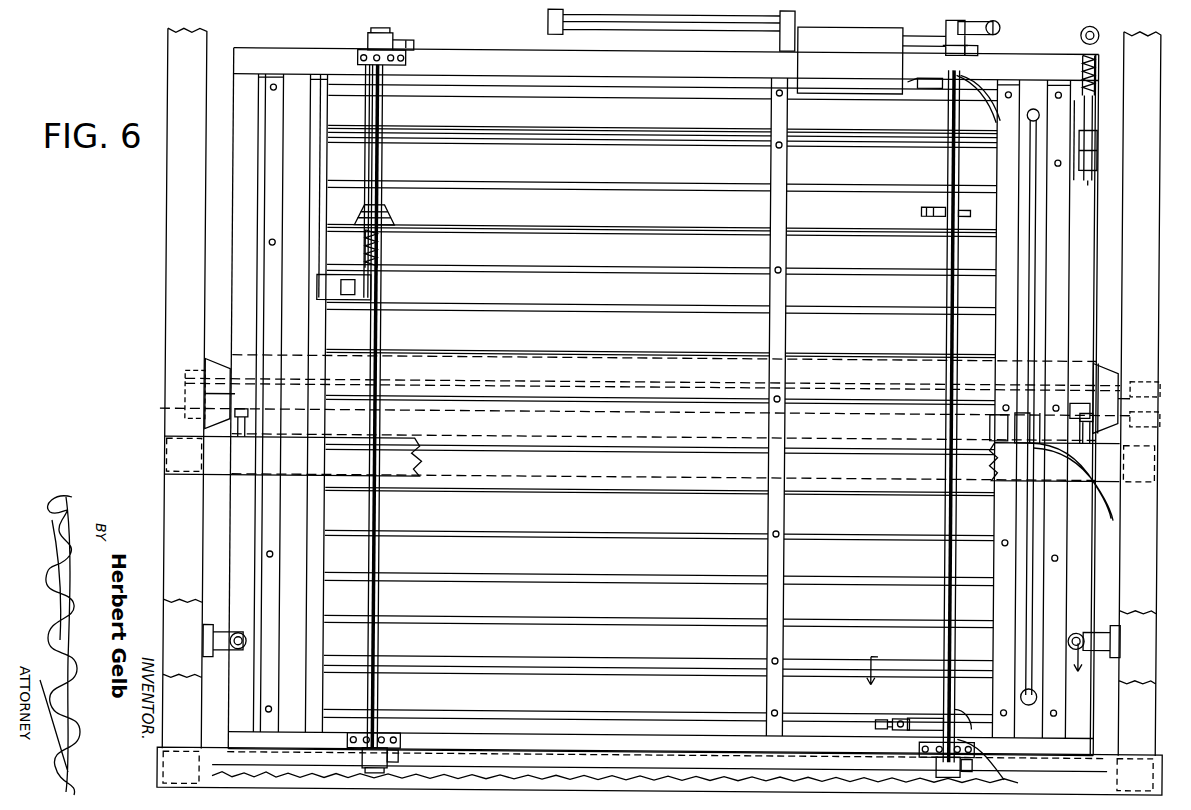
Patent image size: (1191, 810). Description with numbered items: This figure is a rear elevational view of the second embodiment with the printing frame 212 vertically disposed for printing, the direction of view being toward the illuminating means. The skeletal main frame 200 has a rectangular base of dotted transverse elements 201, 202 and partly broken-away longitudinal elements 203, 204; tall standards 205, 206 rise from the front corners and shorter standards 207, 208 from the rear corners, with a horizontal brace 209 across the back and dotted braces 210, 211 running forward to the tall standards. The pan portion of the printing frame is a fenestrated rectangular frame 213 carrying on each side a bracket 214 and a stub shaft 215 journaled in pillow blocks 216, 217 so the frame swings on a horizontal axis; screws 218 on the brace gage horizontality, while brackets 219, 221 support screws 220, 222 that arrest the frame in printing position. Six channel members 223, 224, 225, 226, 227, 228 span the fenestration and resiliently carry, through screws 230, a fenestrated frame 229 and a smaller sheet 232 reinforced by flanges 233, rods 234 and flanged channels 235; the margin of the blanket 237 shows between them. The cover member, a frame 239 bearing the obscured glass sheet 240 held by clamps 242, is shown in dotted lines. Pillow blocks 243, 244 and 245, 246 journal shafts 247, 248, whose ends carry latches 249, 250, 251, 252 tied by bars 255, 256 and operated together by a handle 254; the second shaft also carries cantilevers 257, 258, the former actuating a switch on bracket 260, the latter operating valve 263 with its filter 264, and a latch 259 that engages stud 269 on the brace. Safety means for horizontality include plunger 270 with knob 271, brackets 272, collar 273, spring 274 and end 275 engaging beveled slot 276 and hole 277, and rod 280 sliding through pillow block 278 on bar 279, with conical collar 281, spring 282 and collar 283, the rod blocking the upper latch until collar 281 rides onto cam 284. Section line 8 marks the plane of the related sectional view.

The main frame 200 is at (164, 292).
The transverse element 201 is at (205, 772).
The transverse element 202 is at (1118, 774).
The longitudinal element 203 is at (312, 753).
The longitudinal element 204 is at (1075, 760).
The standard 205 is at (185, 625).
The standard 206 is at (1138, 630).
The standard 207 is at (240, 728).
The standard 208 is at (1110, 738).
The horizontal brace 209 is at (1000, 505).
The horizontal brace 210 is at (165, 462).
The horizontal brace 211 is at (1116, 500).
The printing frame 212 is at (849, 734).
The rectangular frame 213 is at (570, 740).
The bracket 214 is at (1105, 385).
The stub shaft 215 is at (1125, 408).
The pillow block 216 is at (183, 376).
The pillow block 217 is at (1128, 383).
The screw 218 is at (1138, 442).
The bracket 219 is at (224, 632).
The adjustable screw 220 is at (238, 653).
The bracket 221 is at (1095, 650).
The adjustable screw 222 is at (1085, 648).
The channel member 223 is at (268, 518).
The channel member 224 is at (365, 495).
The channel member 225 is at (540, 533).
The channel member 226 is at (765, 536).
The channel member 227 is at (955, 552).
The channel member 228 is at (1060, 292).
The rectangular frame 229 is at (648, 736).
The screw 230 is at (773, 710).
The rectangular sheet 232 is at (302, 149).
The flange 233 is at (510, 136).
The cross member 234 is at (685, 540).
The cross member 235 is at (748, 290).
The blanket 237 is at (510, 700).
The rectangular frame 239 is at (820, 385).
The light-transmitting sheet 240 is at (870, 360).
The clamp 242 is at (975, 755).
The pillow block 243 is at (403, 64).
The pillow block 244 is at (395, 737).
The pillow block 245 is at (968, 88).
The pillow block 246 is at (962, 737).
The shaft 247 is at (382, 648).
The shaft 248 is at (944, 605).
The latch 249 is at (411, 45).
The latch 250 is at (402, 757).
The latch 251 is at (975, 50).
The latch 252 is at (977, 770).
The handle 254 is at (965, 36).
The bar 255 is at (912, 40).
The bar 256 is at (770, 775).
The cantilever 257 is at (935, 88).
The cantilever 258 is at (925, 714).
The latch 259 is at (935, 218).
The bracket 260 is at (920, 90).
The valve 263 is at (905, 714).
The filter 264 is at (884, 714).
The stud 269 is at (948, 470).
The plunger 270 is at (1092, 121).
The knob 271 is at (1080, 31).
The bracket 272 is at (1096, 154).
The collar 273 is at (1075, 103).
The compression spring 274 is at (1078, 66).
The end of plunger 275 is at (1040, 185).
The beveled slot 276 is at (1075, 442).
The hole 277 is at (1080, 445).
The pillow block 278 is at (360, 304).
The bar 279 is at (422, 272).
The rod 280 is at (365, 105).
The truncated conical collar 281 is at (386, 213).
The compression spring 282 is at (378, 249).
The collar 283 is at (381, 95).
The cam 284 is at (358, 442).
The section line 8 is at (973, 679).